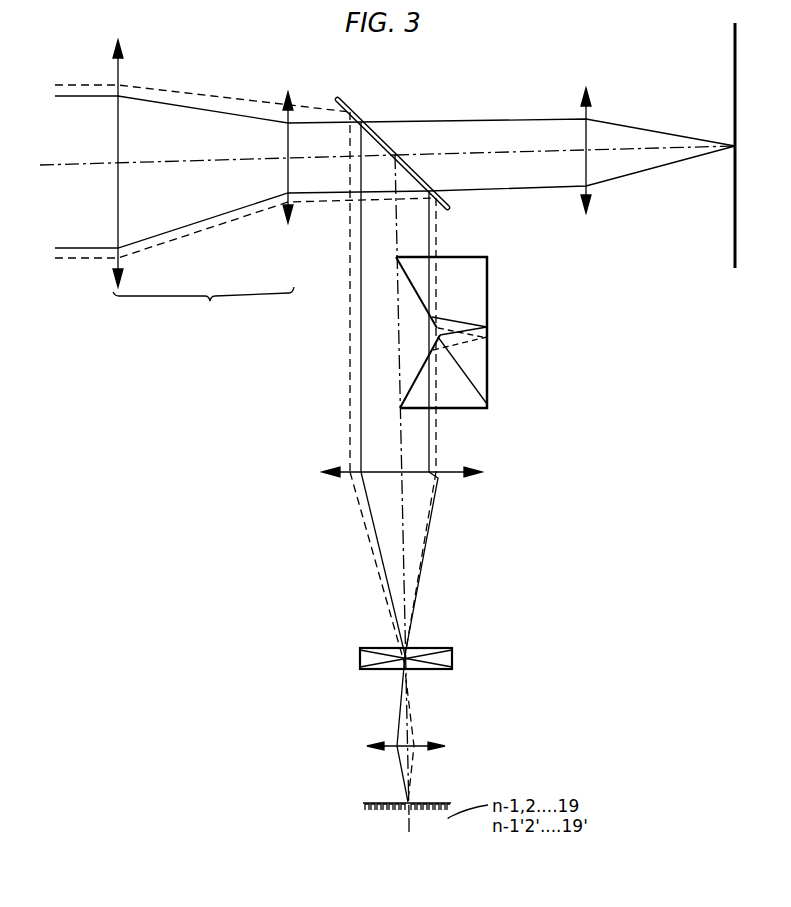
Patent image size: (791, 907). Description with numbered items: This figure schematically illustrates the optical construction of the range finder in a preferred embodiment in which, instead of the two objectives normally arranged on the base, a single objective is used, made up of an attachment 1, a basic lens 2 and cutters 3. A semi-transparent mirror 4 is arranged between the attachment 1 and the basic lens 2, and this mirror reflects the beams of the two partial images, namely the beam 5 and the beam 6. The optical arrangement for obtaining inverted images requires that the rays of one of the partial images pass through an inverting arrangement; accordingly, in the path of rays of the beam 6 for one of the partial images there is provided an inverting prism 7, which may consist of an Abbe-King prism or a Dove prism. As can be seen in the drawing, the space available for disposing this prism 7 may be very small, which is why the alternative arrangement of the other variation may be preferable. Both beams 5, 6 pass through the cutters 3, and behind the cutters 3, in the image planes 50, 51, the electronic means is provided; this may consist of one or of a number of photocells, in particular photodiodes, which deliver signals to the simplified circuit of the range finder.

The attachment 1 is at (203, 186).
The basic lens 2 is at (592, 214).
The cutters 3 is at (453, 658).
The semi-transparent mirror 4 is at (377, 132).
The beam of a partial image 5 is at (361, 355).
The beam of a partial image 6 is at (429, 221).
The inverting prism 7 is at (489, 353).
The image plane 50 is at (370, 801).
The image plane 51 is at (428, 797).